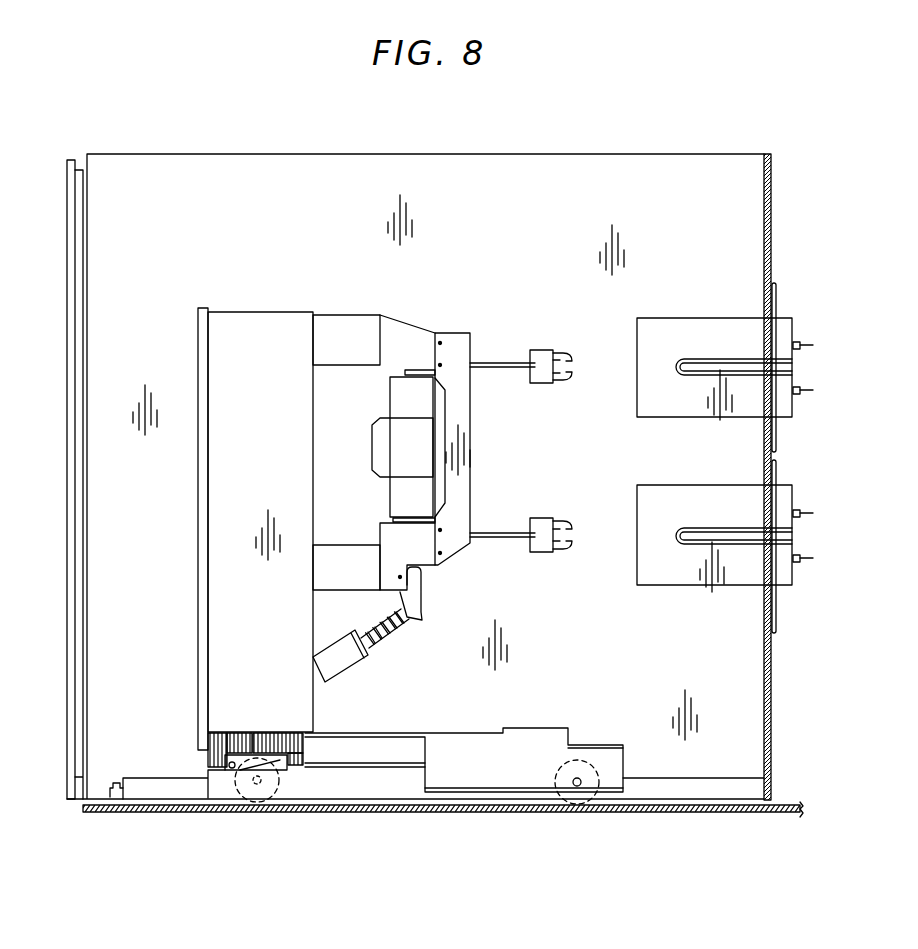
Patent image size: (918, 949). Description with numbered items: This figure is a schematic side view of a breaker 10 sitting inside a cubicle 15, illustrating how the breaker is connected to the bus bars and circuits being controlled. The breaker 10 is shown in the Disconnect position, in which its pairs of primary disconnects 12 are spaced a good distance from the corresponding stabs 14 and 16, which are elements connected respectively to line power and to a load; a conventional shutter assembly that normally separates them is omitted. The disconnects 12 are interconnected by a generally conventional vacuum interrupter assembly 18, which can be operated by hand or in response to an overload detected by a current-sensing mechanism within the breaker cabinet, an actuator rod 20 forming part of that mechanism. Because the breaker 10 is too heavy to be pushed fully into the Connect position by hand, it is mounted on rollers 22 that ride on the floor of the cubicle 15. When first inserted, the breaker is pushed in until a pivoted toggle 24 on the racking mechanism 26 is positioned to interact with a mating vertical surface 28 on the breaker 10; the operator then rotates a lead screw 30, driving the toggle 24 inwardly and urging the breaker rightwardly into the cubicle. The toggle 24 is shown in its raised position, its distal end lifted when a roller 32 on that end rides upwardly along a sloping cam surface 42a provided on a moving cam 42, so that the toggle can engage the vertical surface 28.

The breaker 10 is at (255, 298).
The primary disconnects 12 is at (560, 350).
The stab 14 is at (676, 360).
The cubicle 15 is at (156, 222).
The stab 16 is at (677, 545).
The vacuum interrupter assembly 18 is at (372, 440).
The actuator rod 20 is at (338, 672).
The rollers 22 is at (255, 800).
The pivoted toggle 24 is at (252, 760).
The racking mechanism 26 is at (161, 805).
The vertical surface 28 is at (318, 757).
The lead screw 30 is at (108, 797).
The roller 32 is at (287, 770).
The moving cam 42 is at (218, 790).
The sloping cam surface 42a is at (312, 770).